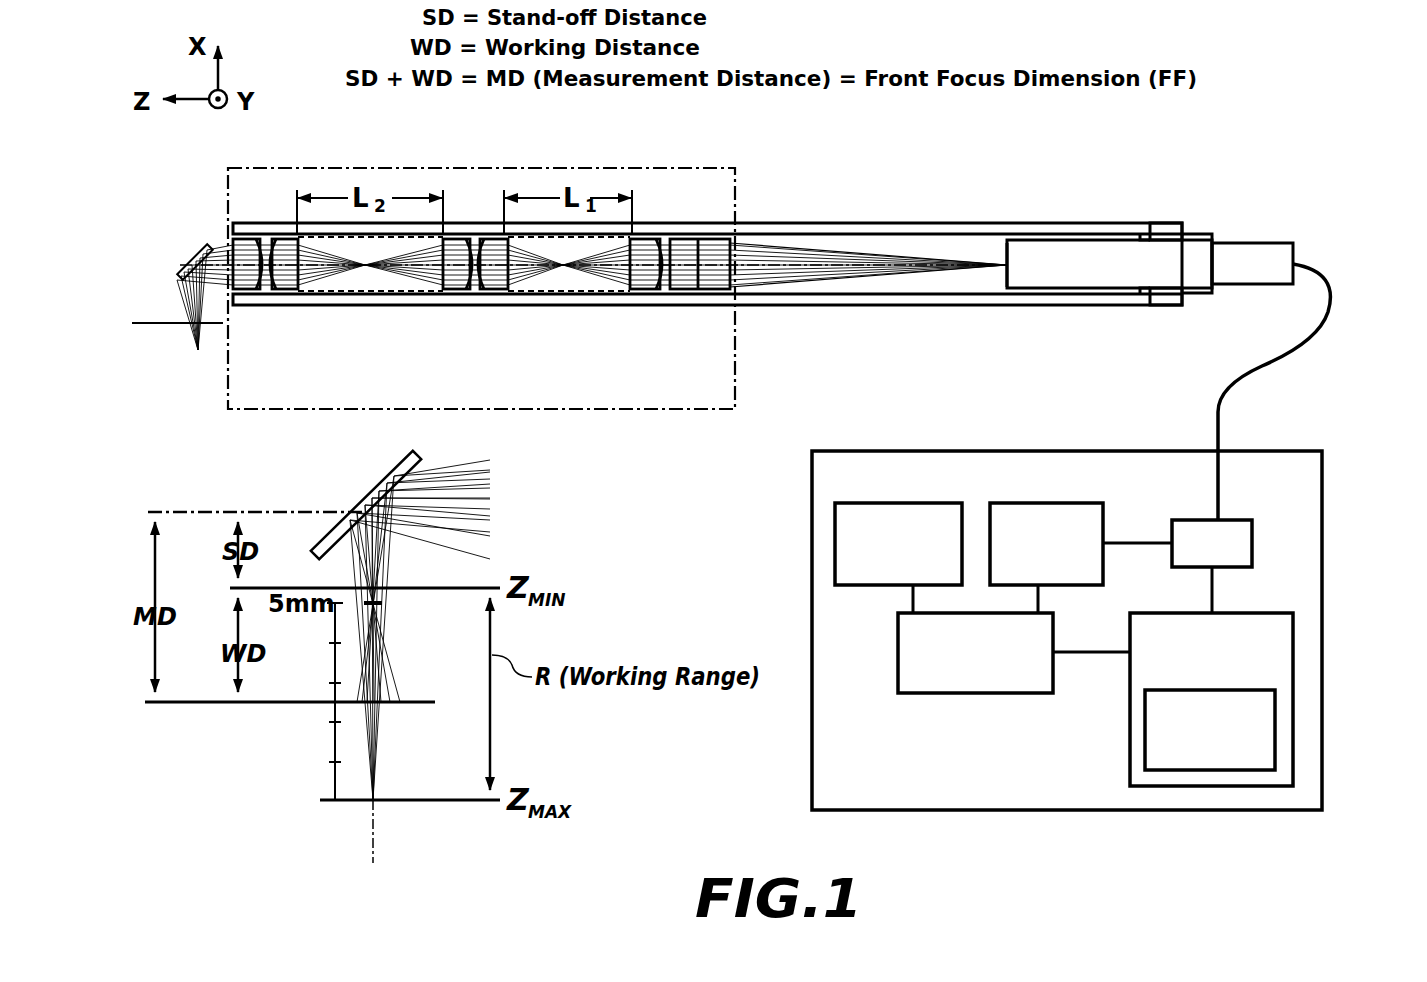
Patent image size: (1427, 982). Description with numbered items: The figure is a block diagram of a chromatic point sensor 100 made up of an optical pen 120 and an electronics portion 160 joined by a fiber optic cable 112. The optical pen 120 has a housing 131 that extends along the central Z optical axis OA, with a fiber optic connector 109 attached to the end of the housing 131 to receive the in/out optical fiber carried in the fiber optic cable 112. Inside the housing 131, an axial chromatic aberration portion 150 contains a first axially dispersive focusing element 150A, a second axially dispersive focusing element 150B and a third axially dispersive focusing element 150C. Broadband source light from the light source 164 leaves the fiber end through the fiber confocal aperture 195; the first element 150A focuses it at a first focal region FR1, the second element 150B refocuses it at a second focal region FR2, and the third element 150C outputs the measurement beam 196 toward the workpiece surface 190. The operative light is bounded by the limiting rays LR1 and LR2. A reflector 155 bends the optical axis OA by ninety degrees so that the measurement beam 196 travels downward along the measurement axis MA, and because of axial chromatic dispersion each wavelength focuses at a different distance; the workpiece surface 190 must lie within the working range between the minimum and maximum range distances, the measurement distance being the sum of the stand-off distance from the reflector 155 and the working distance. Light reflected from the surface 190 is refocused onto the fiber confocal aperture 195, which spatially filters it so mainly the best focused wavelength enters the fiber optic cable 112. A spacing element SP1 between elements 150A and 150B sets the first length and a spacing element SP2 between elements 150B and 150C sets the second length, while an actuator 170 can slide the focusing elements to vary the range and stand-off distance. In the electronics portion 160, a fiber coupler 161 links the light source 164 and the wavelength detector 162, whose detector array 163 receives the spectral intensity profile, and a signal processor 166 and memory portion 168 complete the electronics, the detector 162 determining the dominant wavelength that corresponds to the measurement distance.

The chromatic point sensor 100 is at (1355, 370).
The fiber optic connector 109 is at (1200, 234).
The fiber optic cable 112 is at (1322, 275).
The optical pen 120 is at (1270, 372).
The housing 131 is at (1068, 223).
The axial chromatic aberration portion 150 is at (484, 320).
The first axially dispersive focusing element 150A is at (682, 294).
The second axially dispersive focusing element 150B is at (508, 309).
The third axially dispersive focusing element 150C is at (298, 309).
The reflector 155 is at (195, 258).
The electronics portion 160 is at (1293, 451).
The fiber coupler 161 is at (1195, 560).
The wavelength detector 162 is at (1138, 667).
The detector array 163 is at (1152, 735).
The light source 164 is at (1077, 503).
The signal processor 166 is at (935, 693).
The memory portion 168 is at (887, 586).
The actuator 170 is at (450, 168).
The workpiece surface 190 is at (190, 323).
The fiber confocal aperture 195 is at (1005, 262).
The measurement beam 196 is at (402, 560).
The first focal region FR1 is at (565, 278).
The second focal region FR2 is at (365, 278).
The spacing element SP1 is at (540, 292).
The spacing element SP2 is at (330, 292).
The limiting ray LR1 is at (780, 247).
The limiting ray LR2 is at (905, 270).
The optical axis OA is at (793, 265).
The measurement axis MA is at (373, 848).